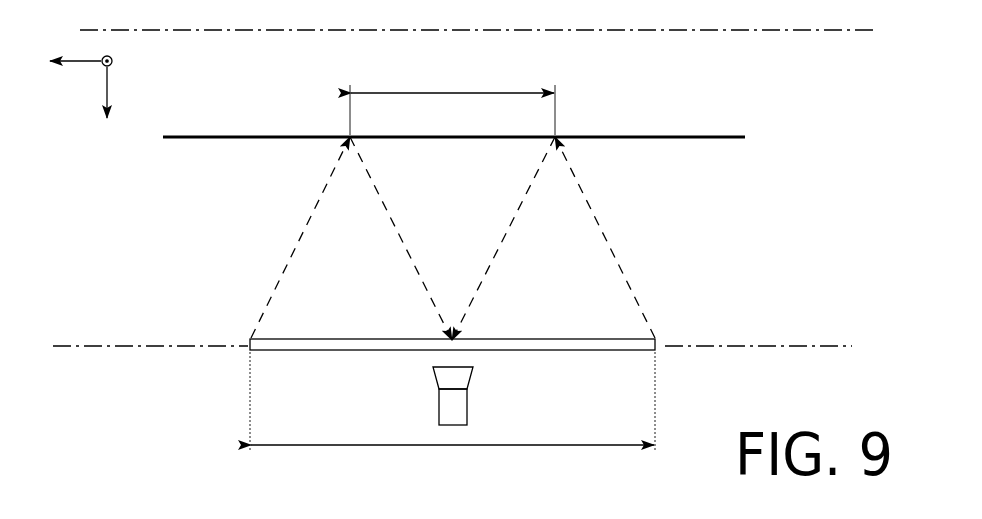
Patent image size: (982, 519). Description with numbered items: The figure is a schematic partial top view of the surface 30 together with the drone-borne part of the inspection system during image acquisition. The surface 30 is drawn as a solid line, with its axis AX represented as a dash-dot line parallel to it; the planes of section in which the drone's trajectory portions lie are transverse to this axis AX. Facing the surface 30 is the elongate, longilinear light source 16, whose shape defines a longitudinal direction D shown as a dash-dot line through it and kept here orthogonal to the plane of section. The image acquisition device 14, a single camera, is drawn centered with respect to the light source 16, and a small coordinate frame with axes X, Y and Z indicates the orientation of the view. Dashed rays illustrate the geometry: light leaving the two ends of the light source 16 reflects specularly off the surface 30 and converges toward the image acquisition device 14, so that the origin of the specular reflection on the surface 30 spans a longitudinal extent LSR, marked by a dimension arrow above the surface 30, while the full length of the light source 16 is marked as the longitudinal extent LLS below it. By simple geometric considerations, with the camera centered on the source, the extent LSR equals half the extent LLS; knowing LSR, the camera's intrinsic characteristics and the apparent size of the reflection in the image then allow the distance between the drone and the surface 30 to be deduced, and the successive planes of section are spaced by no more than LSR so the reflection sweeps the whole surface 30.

The axis AX is at (828, 33).
The surface 30 is at (705, 139).
The light source 16 is at (345, 351).
The image acquisition device 14 is at (468, 406).
The longitudinal direction D is at (150, 348).
The X axis X is at (68, 45).
The Y axis Y is at (120, 105).
The Z axis Z is at (120, 57).
The longitudinal extent of the specular reflection LSR is at (452, 96).
The longitudinal extent of the light source LLS is at (452, 420).